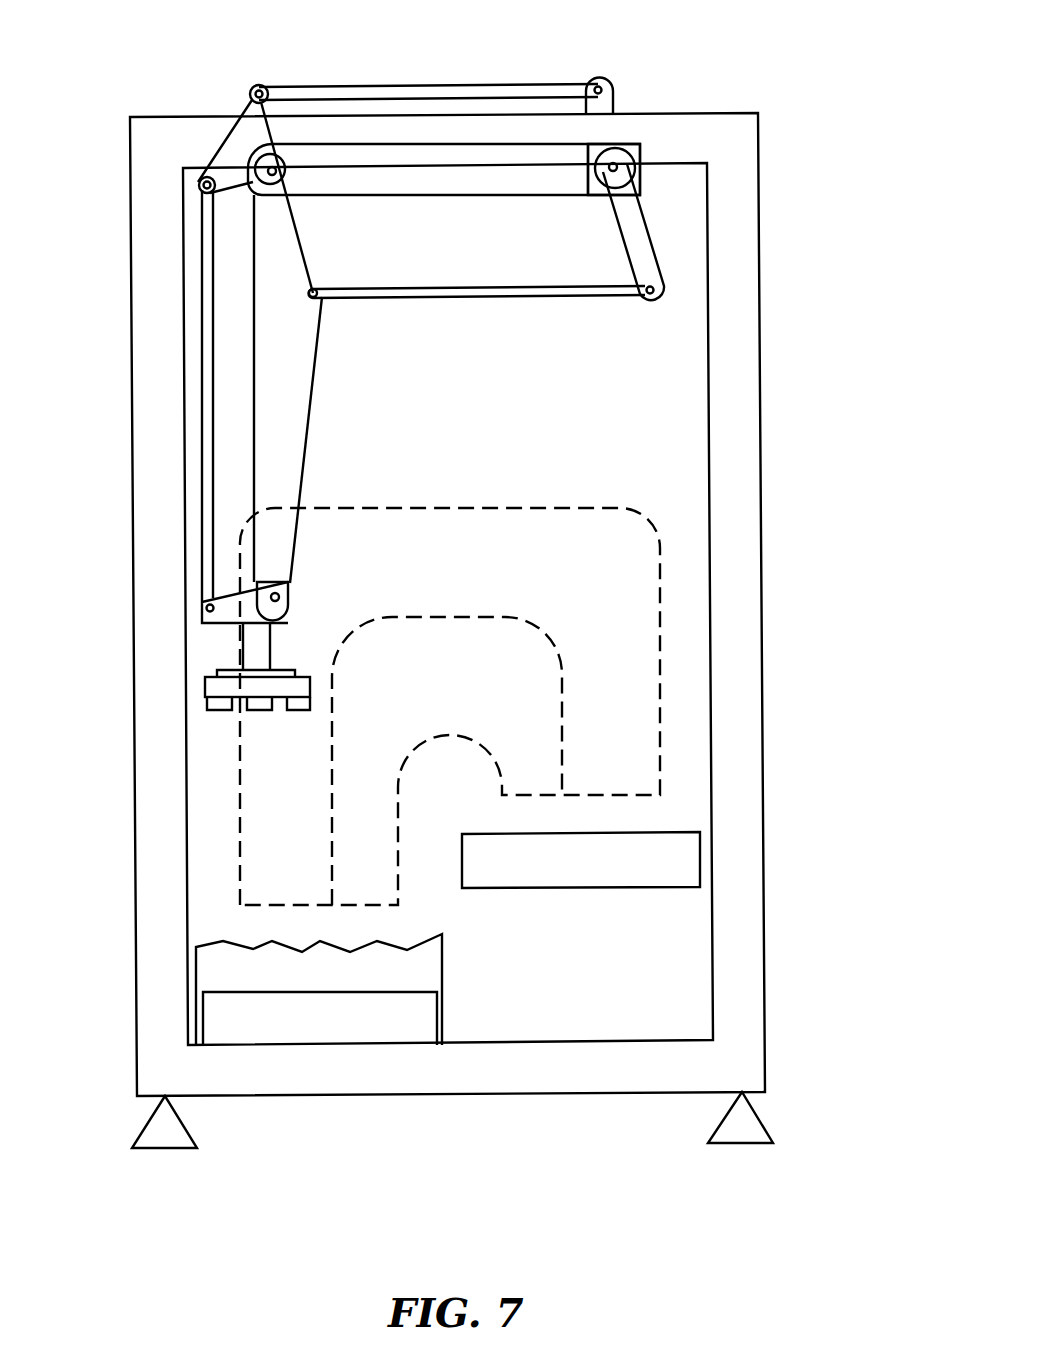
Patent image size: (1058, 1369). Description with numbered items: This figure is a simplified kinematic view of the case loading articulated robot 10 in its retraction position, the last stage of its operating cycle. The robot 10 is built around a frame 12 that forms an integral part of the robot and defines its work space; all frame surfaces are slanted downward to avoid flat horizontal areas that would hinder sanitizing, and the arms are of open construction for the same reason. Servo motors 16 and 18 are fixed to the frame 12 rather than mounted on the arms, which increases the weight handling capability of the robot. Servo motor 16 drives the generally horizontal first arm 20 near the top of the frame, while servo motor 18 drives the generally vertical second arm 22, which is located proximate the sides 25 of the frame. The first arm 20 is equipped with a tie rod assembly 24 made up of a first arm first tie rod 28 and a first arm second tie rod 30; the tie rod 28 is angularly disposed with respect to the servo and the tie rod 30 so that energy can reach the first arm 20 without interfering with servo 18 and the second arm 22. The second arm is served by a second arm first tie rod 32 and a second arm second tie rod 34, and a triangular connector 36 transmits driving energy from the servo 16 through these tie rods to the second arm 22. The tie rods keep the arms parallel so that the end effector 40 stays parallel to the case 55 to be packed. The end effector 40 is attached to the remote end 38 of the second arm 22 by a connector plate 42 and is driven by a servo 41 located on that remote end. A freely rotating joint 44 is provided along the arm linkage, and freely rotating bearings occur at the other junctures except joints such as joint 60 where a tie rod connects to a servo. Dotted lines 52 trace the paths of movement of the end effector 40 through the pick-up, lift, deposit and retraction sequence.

The case loading articulated robot 10 is at (473, 630).
The frame 12 is at (738, 600).
The servo motor 16 is at (632, 153).
The servo motor 18 is at (388, 355).
The first arm 20 is at (457, 185).
The second arm 22 is at (292, 540).
The tie rod assembly 24 is at (370, 354).
The sides 25 is at (122, 328).
The first arm first tie rod 28 is at (638, 240).
The first arm second tie rod 30 is at (553, 294).
The second arm first tie rod 32 is at (403, 85).
The second arm second tie rod 34 is at (210, 373).
The triangular connector 36 is at (248, 106).
The remote end 38 is at (324, 620).
The end effector 40 is at (308, 683).
The servo 41 is at (283, 670).
The connector plate 42 is at (228, 618).
The freely rotating joint 44 is at (317, 290).
The dotted lines 52 is at (658, 565).
The case 55 is at (443, 962).
The joint 60 is at (616, 166).